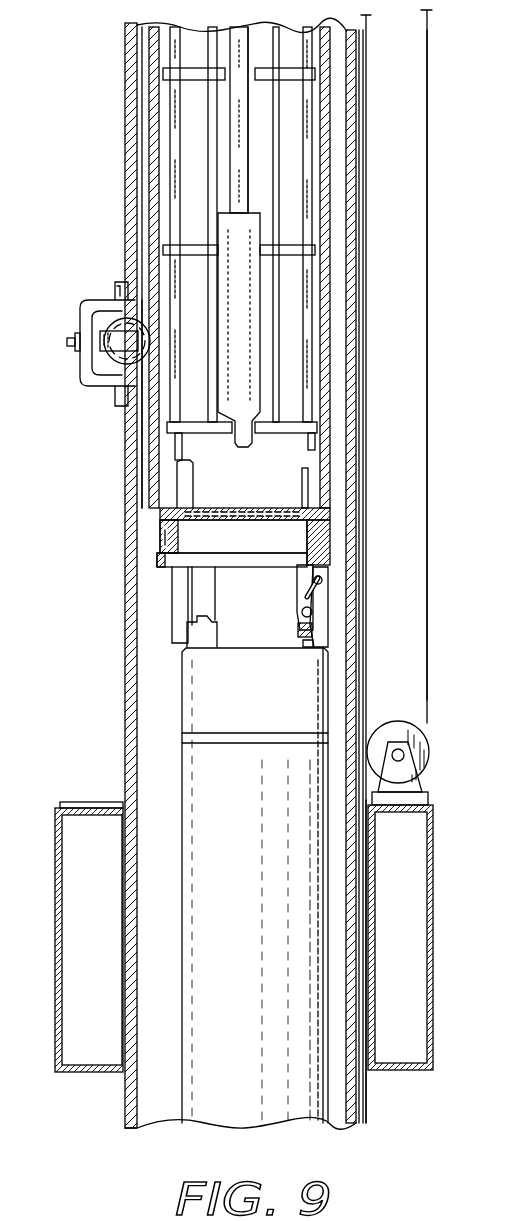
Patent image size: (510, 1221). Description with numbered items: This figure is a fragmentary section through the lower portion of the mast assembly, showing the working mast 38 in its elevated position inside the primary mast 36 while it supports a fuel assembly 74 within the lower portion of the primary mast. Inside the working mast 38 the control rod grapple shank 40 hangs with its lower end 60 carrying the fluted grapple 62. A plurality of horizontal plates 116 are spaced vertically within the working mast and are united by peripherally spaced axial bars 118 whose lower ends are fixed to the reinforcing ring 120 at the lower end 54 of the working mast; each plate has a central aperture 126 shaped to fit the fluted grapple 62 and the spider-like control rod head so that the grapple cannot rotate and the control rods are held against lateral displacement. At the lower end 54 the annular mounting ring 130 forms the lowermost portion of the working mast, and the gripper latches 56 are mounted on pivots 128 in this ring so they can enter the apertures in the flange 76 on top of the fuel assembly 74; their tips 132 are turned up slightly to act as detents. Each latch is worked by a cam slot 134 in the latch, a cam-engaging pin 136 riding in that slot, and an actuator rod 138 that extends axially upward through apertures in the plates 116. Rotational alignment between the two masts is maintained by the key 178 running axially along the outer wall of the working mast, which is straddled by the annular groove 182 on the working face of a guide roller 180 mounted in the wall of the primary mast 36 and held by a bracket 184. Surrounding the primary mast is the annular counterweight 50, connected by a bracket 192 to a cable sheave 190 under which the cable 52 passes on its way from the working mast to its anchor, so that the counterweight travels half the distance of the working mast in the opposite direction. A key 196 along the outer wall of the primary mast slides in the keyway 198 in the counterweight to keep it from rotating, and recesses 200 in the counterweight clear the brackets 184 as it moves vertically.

The primary mast 36 is at (122, 86).
The working mast 38 is at (331, 77).
The control rod grapple shank 40 is at (258, 175).
The counterweight 50 is at (373, 862).
The cable 52 is at (427, 652).
The lower end of the working mast 54 is at (327, 558).
The gripper latch 56 is at (302, 600).
The lower end of the grapple shank 60 is at (232, 160).
The grapple 62 is at (263, 340).
The fuel assembly 74 is at (180, 753).
The flange 76 is at (298, 625).
The plate 116 is at (190, 67).
The bar 118 is at (173, 447).
The reinforcing ring 120 is at (156, 540).
The aperture 126 is at (262, 248).
The pivot 128 is at (312, 612).
The annular mounting ring 130 is at (328, 633).
The tip 132 is at (296, 630).
The cam slot 134 is at (320, 578).
The cam-engaging pin 136 is at (322, 595).
The actuator rod 138 is at (303, 487).
The key 178 is at (150, 427).
The guide roller 180 is at (118, 362).
The annular groove 182 is at (112, 325).
The bracket 184 is at (90, 300).
The cable sheave 190 is at (405, 697).
The bracket 192 is at (390, 772).
The key 196 is at (365, 1103).
The keyway 198 is at (370, 1032).
The recess 200 is at (90, 813).